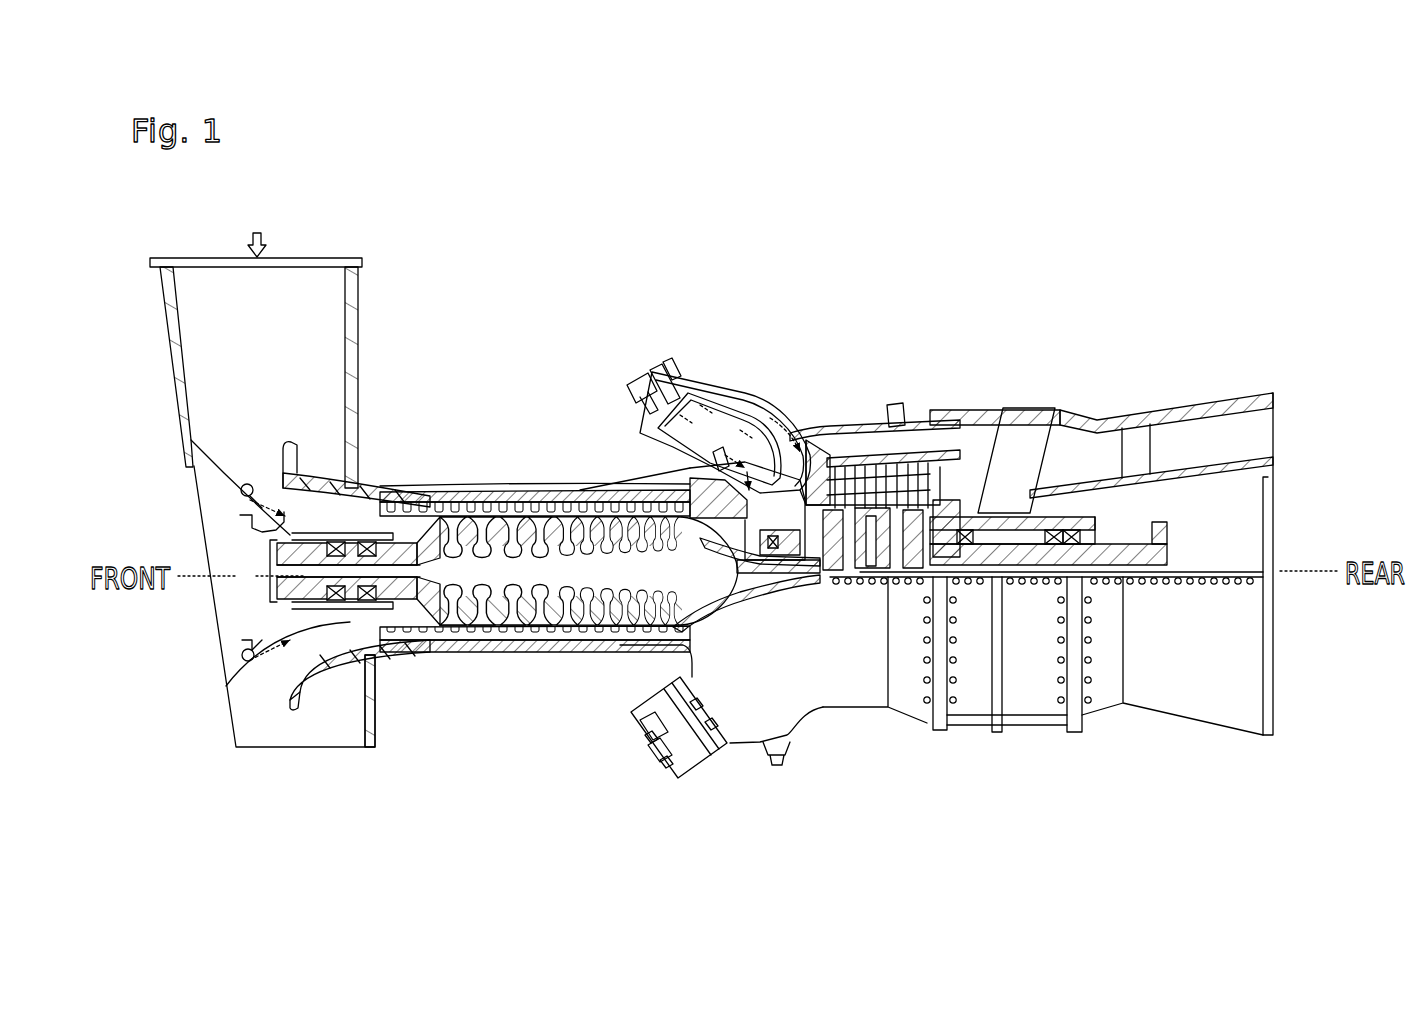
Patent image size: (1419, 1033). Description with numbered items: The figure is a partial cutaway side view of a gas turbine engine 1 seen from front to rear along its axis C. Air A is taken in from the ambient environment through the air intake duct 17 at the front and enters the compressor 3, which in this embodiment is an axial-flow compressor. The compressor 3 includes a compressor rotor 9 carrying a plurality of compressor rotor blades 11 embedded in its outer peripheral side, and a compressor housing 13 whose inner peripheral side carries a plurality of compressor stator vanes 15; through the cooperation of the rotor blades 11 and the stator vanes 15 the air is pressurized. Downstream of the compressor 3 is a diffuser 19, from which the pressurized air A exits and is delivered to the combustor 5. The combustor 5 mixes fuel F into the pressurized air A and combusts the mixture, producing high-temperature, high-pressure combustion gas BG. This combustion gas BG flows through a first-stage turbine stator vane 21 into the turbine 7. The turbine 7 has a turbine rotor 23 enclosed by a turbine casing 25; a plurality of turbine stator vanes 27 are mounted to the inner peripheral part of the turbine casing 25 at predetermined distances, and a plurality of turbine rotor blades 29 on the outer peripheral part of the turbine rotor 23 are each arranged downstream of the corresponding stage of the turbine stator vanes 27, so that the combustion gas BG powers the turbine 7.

The gas turbine engine 1 is at (487, 297).
The compressor 3 is at (600, 579).
The combustor 5 is at (702, 373).
The turbine 7 is at (922, 441).
The compressor rotor 9 is at (497, 652).
The compressor rotor blades 11 is at (410, 645).
The compressor housing 13 is at (510, 502).
The compressor stator vanes 15 is at (430, 502).
The air intake duct 17 is at (360, 319).
The diffuser 19 is at (660, 495).
The turbine stator vane 21 is at (828, 455).
The turbine rotor 23 is at (1010, 570).
The turbine casing 25 is at (845, 470).
The turbine stator vanes 27 is at (862, 470).
The turbine rotor blades 29 is at (947, 440).
The air A is at (268, 242).
The fuel F is at (620, 378).
The combustion gas BG is at (781, 445).
The rotation axis C is at (1290, 568).